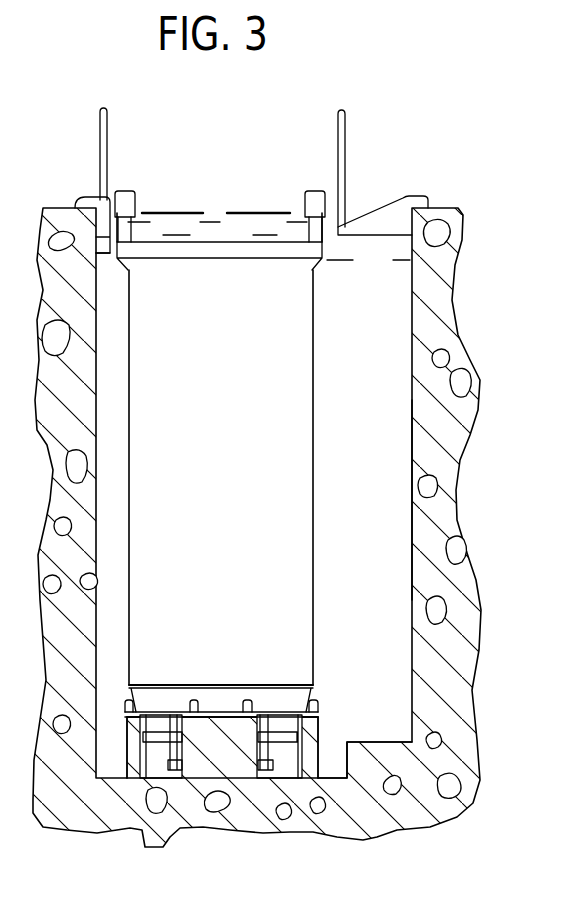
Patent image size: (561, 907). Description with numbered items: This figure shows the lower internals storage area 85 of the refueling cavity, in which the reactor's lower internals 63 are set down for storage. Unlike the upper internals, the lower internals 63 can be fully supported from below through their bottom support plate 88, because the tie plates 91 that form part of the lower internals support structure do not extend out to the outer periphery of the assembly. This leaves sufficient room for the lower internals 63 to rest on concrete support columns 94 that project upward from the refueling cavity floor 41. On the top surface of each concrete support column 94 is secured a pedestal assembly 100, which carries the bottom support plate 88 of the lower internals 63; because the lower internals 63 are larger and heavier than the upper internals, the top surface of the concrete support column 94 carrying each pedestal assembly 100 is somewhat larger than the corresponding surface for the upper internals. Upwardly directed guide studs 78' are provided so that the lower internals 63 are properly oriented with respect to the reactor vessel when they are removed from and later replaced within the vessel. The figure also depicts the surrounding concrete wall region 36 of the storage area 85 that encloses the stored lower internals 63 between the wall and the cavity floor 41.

The lower internals storage area 85 is at (524, 334).
The guide studs 78' is at (246, 167).
The lower internals 63 is at (222, 252).
The cavity wall 36 is at (412, 479).
The pedestal assembly 100 is at (253, 476).
The bottom support plate 88 is at (162, 712).
The tie plates 91 is at (166, 738).
The concrete support column 94 is at (308, 768).
The refueling cavity floor 41 is at (328, 777).